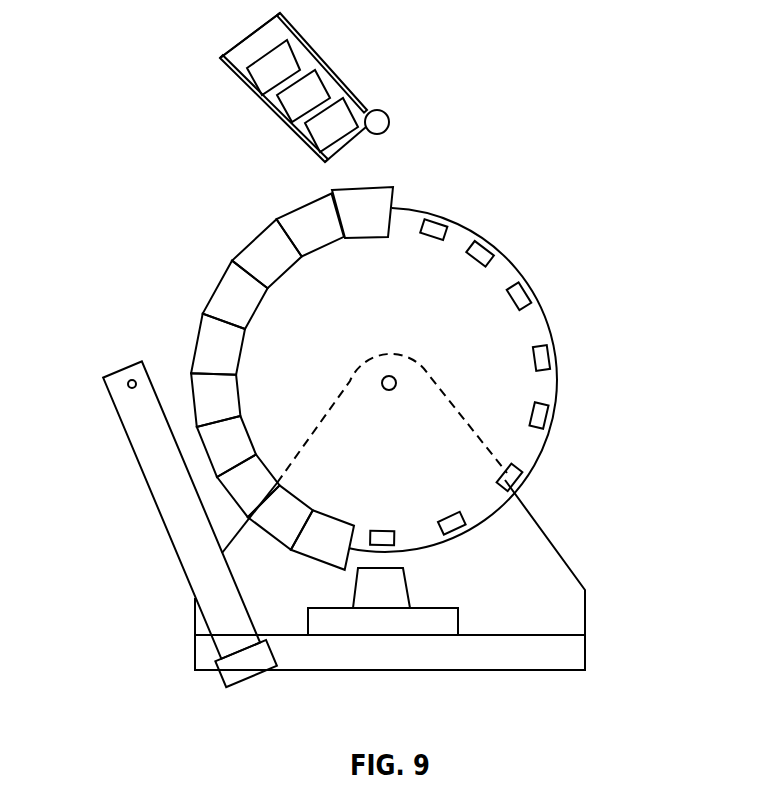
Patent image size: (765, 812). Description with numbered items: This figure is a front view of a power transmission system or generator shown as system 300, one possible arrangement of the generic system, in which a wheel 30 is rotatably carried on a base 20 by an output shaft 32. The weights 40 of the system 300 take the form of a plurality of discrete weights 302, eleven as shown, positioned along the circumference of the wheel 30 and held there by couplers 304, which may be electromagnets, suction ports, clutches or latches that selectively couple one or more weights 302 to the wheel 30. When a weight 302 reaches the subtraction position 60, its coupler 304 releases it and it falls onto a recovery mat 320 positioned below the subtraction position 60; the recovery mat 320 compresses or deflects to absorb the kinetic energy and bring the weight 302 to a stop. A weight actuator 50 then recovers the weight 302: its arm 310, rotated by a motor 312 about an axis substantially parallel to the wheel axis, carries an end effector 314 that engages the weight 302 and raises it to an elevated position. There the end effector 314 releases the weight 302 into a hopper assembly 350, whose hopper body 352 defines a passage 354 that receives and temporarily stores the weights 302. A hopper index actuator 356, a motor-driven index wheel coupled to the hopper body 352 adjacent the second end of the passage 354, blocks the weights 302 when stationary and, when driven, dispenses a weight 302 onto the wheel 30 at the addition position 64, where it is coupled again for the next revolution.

The system 300 is at (575, 103).
The base 20 is at (548, 558).
The wheel 30 is at (540, 374).
The output shaft 32 is at (397, 382).
The weights 40 is at (433, 182).
The weight actuator 50 is at (111, 354).
The subtraction position 60 is at (386, 550).
The addition position 64 is at (373, 167).
The weights 302 is at (340, 110).
The couplers 304 is at (440, 222).
The arm 310 is at (157, 486).
The motor 312 is at (128, 384).
The end effector 314 is at (238, 668).
The recovery mat 320 is at (450, 623).
The hopper assembly 350 is at (217, 103).
The hopper body 352 is at (292, 26).
The passage 354 is at (303, 65).
The hopper index actuator 356 is at (391, 121).